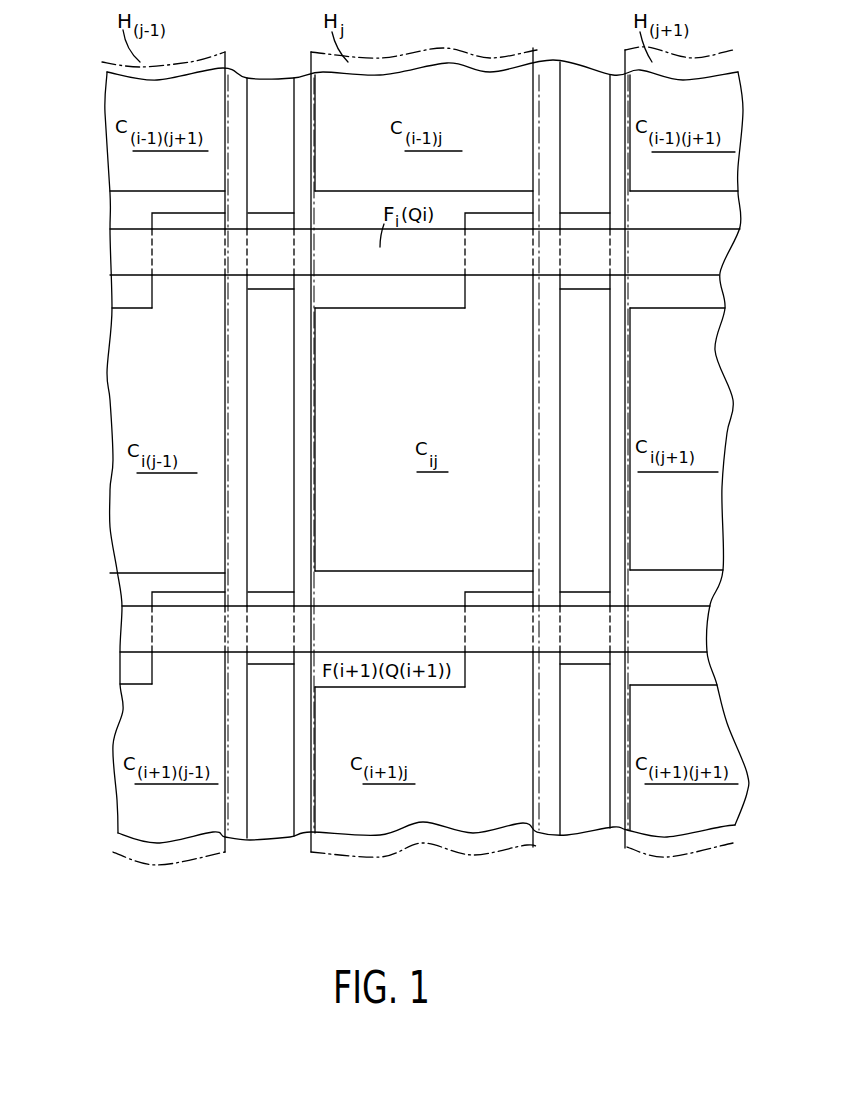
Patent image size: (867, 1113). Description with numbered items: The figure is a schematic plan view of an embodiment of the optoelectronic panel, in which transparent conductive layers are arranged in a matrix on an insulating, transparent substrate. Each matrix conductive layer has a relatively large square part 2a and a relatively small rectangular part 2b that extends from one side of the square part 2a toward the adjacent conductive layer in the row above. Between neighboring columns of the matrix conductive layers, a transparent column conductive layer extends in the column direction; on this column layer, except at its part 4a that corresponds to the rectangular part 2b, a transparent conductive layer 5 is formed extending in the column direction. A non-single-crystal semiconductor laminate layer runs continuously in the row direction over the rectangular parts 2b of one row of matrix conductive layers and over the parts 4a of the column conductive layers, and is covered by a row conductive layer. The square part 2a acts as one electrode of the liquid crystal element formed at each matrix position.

The square part 2a is at (493, 78).
The rectangular part 2b is at (158, 295).
The part of conductive layer Dj 4a is at (283, 223).
The transparent conductive layer 5 is at (620, 882).